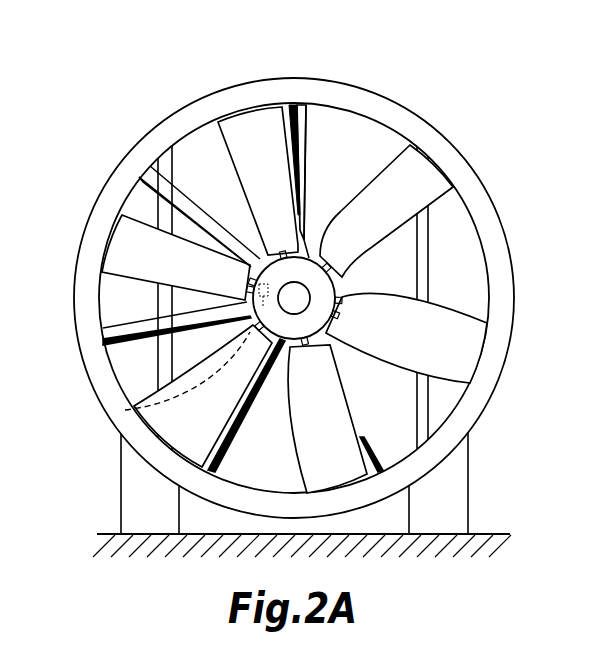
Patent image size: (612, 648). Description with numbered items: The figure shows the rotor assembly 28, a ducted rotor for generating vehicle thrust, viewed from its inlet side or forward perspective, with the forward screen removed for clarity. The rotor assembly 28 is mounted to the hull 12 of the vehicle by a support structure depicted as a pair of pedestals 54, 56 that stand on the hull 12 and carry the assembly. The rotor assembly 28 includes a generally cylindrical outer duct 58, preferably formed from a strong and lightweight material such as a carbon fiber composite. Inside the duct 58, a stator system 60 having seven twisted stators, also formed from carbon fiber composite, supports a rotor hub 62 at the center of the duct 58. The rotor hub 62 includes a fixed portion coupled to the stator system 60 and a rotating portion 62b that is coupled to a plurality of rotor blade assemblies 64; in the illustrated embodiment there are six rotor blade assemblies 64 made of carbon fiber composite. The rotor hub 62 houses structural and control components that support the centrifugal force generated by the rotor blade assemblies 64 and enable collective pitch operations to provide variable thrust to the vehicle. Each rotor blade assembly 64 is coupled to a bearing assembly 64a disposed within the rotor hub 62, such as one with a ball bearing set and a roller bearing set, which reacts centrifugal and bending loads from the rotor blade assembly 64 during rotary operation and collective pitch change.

The rotor assembly 28 is at (189, 78).
The outer duct 58 is at (466, 171).
The stator system 60 is at (312, 127).
The rotor hub 62 is at (325, 297).
The rotating portion 62b is at (320, 322).
The rotor blade assembly 64 is at (118, 270).
The bearing assembly 64a is at (125, 410).
The pedestal 56 is at (127, 478).
The pedestal 54 is at (462, 478).
The hull 12 is at (490, 534).